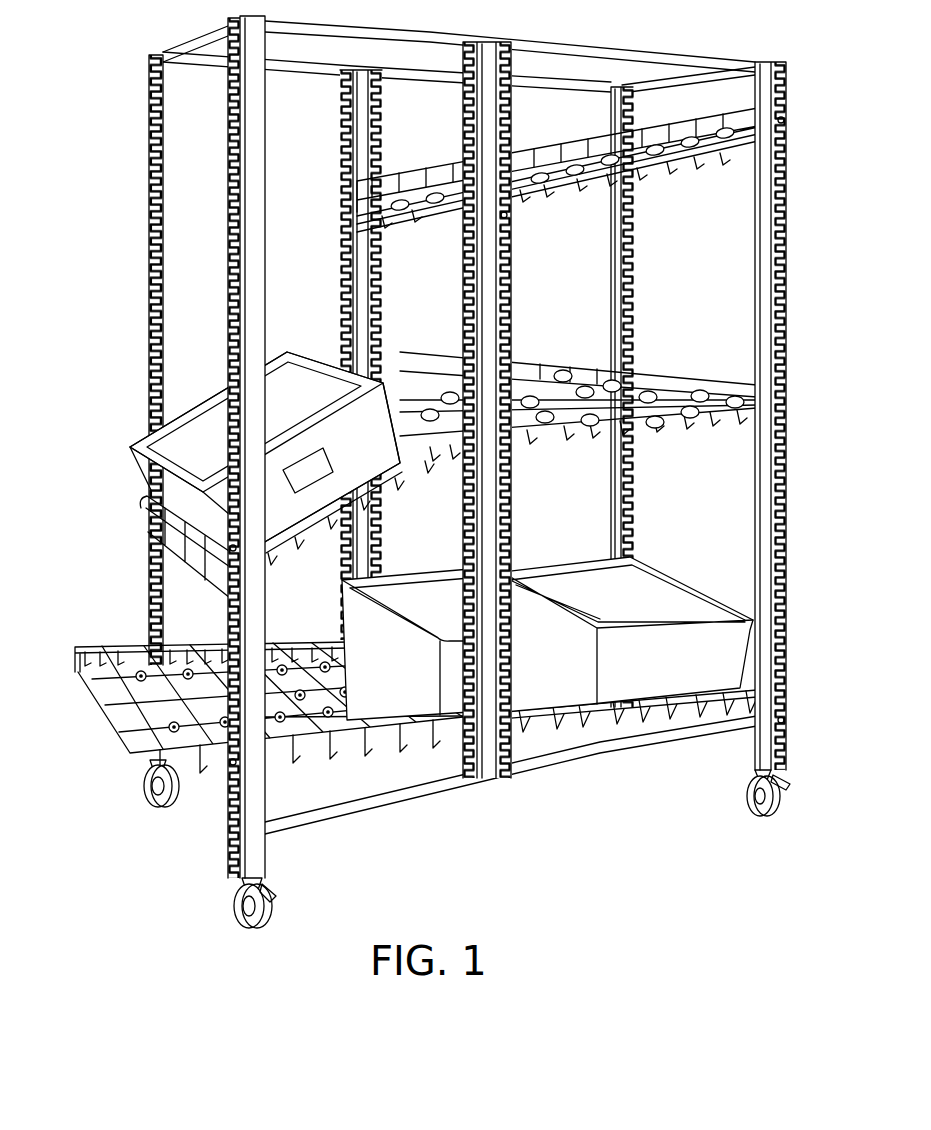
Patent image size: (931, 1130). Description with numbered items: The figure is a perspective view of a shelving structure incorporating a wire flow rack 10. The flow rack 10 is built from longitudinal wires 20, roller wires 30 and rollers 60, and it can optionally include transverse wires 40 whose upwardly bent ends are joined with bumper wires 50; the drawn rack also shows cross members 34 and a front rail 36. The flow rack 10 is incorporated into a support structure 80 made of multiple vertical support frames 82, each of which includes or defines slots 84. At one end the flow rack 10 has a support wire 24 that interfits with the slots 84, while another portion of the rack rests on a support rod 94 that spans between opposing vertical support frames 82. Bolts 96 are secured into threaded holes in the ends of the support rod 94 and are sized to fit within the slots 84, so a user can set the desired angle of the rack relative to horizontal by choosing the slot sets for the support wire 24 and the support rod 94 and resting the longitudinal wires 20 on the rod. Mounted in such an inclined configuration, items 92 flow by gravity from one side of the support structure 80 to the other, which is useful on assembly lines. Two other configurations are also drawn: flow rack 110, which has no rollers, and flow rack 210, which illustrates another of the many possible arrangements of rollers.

The flow rack 10 is at (438, 472).
The longitudinal wires 20 is at (80, 697).
The support wire 24 is at (750, 703).
The roller wires 30 is at (120, 660).
The cross wire 34 is at (116, 708).
The front rail 36 is at (83, 650).
The transverse wires 40 is at (332, 646).
The bumper wires 50 is at (250, 685).
The rollers 60 is at (294, 656).
The support structure 80 is at (114, 360).
The vertical support frames 82 is at (163, 150).
The slots 84 is at (150, 232).
The items 92 is at (415, 536).
The support rod 94 is at (146, 537).
The bolts 96 is at (238, 603).
The flow rack 110 is at (664, 158).
The flow rack 210 is at (687, 388).